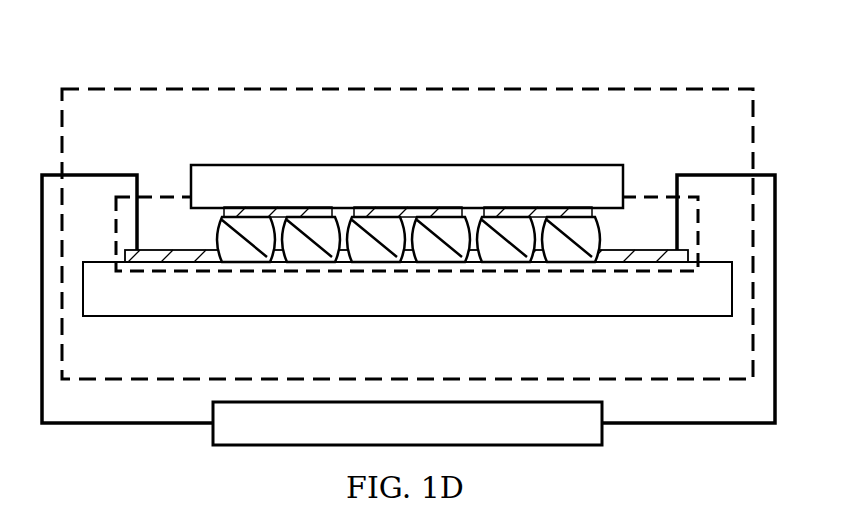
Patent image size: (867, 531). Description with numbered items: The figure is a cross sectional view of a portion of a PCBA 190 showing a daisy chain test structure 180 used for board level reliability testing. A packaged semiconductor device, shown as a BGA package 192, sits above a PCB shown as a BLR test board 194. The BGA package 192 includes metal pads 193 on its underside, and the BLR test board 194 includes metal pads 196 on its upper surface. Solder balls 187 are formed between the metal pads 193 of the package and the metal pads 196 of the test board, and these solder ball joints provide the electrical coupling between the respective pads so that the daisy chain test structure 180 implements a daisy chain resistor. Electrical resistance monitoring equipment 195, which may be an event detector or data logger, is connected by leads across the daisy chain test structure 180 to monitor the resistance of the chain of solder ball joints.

The PCBA 190 is at (589, 67).
The daisy chain test structure 180 is at (178, 196).
The BGA package 192 is at (404, 164).
The metal pads 193 is at (232, 213).
The solder balls 187 is at (590, 233).
The metal pads 196 is at (191, 254).
The BLR test board 194 is at (613, 307).
The electrical monitoring equipment 195 is at (268, 447).